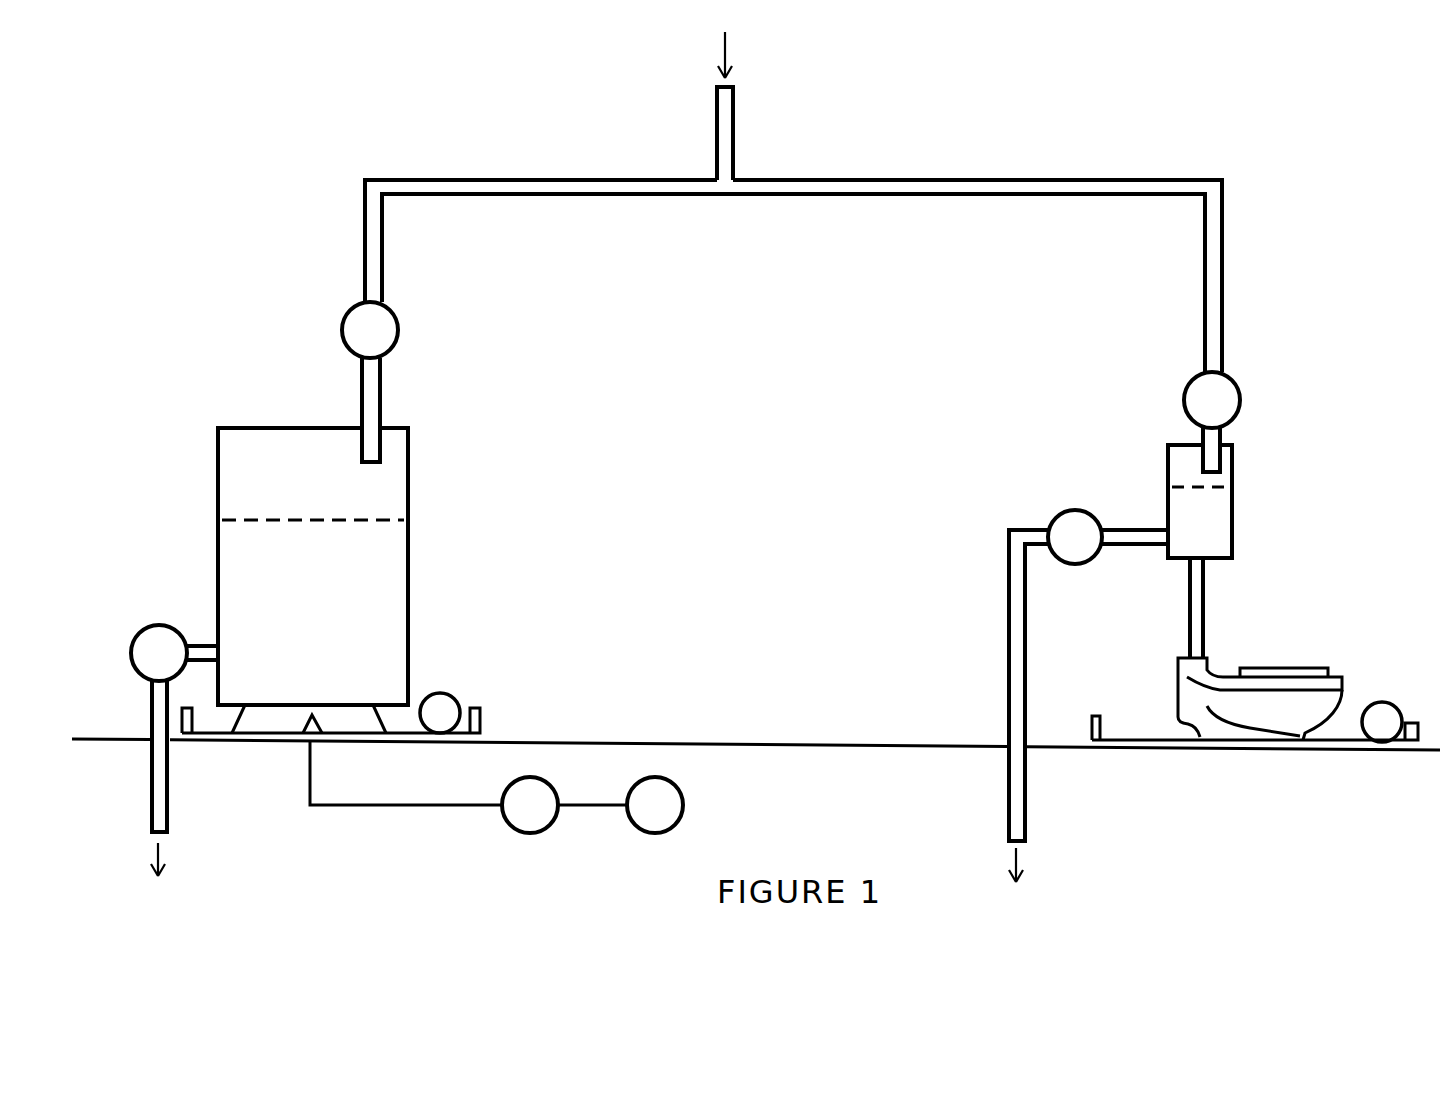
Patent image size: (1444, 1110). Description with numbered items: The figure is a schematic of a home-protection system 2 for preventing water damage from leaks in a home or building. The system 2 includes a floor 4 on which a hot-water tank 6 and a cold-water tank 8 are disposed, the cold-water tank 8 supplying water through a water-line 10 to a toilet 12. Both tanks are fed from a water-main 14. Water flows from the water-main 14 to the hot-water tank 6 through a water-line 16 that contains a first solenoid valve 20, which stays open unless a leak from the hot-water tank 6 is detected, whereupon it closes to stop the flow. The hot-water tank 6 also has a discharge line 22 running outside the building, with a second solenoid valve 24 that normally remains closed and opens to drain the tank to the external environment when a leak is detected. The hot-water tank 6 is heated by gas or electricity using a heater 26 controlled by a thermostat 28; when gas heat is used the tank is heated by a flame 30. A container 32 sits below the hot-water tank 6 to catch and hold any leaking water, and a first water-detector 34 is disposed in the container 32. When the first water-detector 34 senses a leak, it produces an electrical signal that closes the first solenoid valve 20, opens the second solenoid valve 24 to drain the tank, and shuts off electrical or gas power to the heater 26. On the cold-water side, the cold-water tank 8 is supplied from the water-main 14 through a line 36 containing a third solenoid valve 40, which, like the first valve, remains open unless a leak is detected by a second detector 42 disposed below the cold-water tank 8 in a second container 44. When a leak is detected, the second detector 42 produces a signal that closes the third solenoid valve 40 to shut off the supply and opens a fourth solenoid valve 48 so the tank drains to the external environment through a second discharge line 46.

The home-protection system 2 is at (850, 105).
The floor 4 is at (792, 745).
The hot-water tank 6 is at (408, 612).
The cold-water tank 8 is at (1232, 520).
The water-line 10 is at (1203, 572).
The toilet 12 is at (1342, 658).
The water-main 14 is at (716, 102).
The water-line 16 is at (652, 197).
The first solenoid valve 20 is at (398, 328).
The discharge line 22 is at (205, 647).
The second solenoid valve 24 is at (157, 625).
The heater 26 is at (683, 800).
The thermostat 28 is at (517, 785).
The flame 30 is at (303, 722).
The container 32 is at (480, 708).
The first water-detector 34 is at (455, 700).
The line 36 is at (1222, 264).
The third solenoid valve 40 is at (1240, 396).
The second detector 42 is at (1380, 702).
The second container 44 is at (1100, 716).
The second discharge line 46 is at (1009, 612).
The fourth solenoid valve 48 is at (1068, 510).